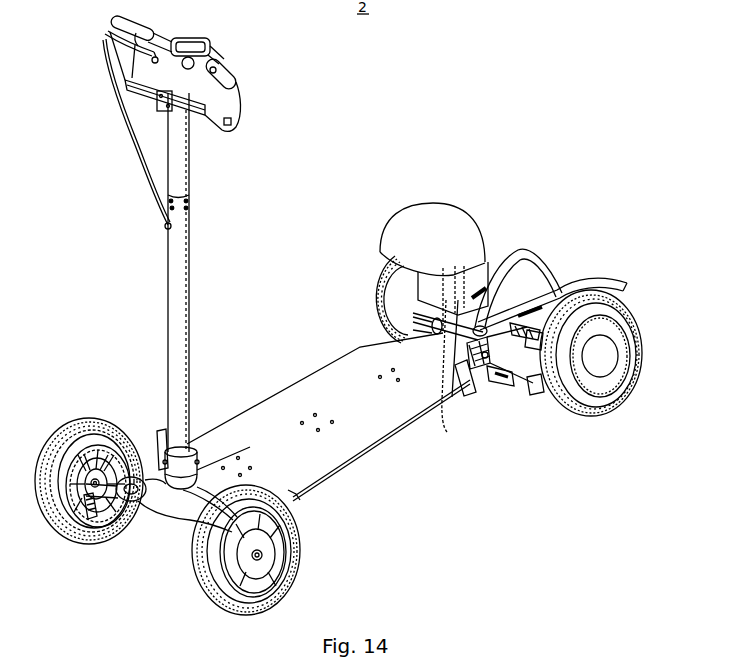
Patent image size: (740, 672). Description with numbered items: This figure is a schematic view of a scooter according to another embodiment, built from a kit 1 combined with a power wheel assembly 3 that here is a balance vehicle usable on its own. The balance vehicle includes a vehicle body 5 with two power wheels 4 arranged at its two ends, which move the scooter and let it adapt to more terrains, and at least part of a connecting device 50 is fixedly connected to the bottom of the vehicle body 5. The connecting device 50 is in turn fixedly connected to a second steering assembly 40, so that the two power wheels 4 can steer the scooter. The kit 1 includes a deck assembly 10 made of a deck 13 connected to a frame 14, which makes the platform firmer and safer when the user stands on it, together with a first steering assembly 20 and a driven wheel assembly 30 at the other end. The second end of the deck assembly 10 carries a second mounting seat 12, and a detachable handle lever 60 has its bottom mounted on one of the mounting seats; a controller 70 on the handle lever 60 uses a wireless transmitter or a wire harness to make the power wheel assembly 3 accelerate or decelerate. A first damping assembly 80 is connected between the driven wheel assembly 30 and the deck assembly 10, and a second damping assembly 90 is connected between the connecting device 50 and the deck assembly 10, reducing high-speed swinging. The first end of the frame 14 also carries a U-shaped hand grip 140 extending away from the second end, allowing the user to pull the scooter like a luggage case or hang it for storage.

The kit 1 is at (317, 297).
The power wheel assembly 3 is at (610, 433).
The power wheels 4 is at (638, 368).
The vehicle body 5 is at (563, 269).
The deck assembly 10 is at (385, 470).
The second mounting seat 12 is at (447, 400).
The deck 13 is at (308, 395).
The frame 14 is at (468, 396).
The first steering assembly 20 is at (168, 549).
The driven wheel assembly 30 is at (306, 586).
The second steering assembly 40 is at (496, 386).
The connecting device 50 is at (540, 400).
The handle lever 60 is at (182, 314).
The controller 70 is at (217, 29).
The first damping assembly 80 is at (295, 498).
The second damping assembly 90 is at (482, 387).
The hand grip 140 is at (135, 505).